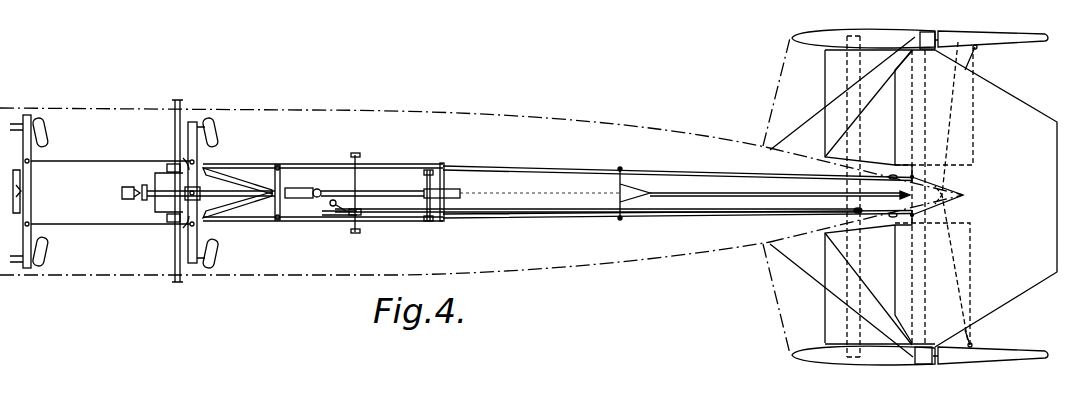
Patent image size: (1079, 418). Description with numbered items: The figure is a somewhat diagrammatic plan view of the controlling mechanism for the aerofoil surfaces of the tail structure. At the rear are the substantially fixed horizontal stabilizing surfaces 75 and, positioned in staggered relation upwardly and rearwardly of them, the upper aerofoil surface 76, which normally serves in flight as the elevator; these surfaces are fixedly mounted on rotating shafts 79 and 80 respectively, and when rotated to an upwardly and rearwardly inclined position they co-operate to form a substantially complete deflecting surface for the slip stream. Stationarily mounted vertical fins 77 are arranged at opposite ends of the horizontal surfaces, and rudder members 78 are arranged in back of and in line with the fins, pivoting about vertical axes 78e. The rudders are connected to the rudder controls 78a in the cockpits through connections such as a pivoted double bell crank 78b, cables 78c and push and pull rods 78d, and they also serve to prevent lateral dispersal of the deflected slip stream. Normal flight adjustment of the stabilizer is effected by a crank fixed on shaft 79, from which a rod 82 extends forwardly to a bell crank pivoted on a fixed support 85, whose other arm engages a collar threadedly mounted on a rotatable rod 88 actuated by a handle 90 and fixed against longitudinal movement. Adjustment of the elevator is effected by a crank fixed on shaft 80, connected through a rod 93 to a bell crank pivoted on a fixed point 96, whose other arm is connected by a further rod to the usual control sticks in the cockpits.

The stabilizing surface 75 is at (880, 196).
The upper aerofoil surface 76 is at (996, 198).
The fin 77 is at (888, 25).
The rudder member 78 is at (1000, 35).
The rudder control 78a is at (47, 131).
The pivoted double bell crank 78b is at (938, 182).
The cable 78c is at (695, 174).
The push and pull rod 78d is at (955, 118).
The vertical axis 78e is at (940, 34).
The rotating shaft 79 is at (853, 185).
The rotating shaft 80 is at (923, 33).
The rod 82 is at (780, 215).
The fixed support 85 is at (425, 221).
The rotatable rod 88 is at (355, 228).
The handle 90 is at (324, 215).
The rod 93 is at (802, 192).
The fixed point 96 is at (426, 186).